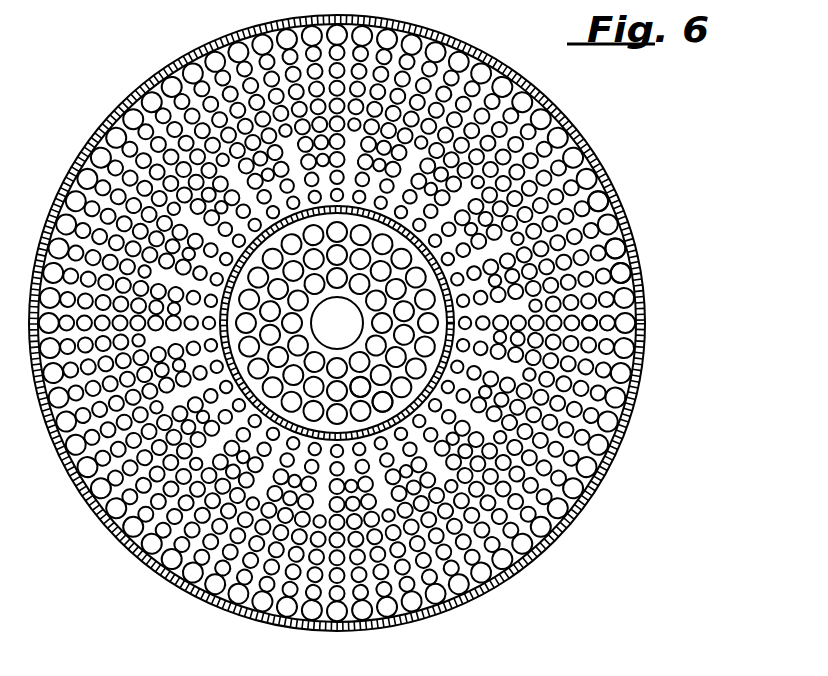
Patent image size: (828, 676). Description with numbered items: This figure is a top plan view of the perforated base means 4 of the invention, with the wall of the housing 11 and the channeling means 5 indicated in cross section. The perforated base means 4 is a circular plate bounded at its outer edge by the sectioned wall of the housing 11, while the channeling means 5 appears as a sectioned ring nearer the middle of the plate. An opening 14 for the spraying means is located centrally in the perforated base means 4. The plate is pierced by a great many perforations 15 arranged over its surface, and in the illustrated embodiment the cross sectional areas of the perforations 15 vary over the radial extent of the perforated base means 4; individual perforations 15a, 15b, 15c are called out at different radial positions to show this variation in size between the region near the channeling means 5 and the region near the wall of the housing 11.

The perforated base means 4 is at (532, 135).
The wall of the housing 11 is at (593, 165).
The channeling means 5 is at (408, 415).
The opening 14 is at (326, 336).
The perforations 15 is at (607, 203).
The perforation 15a is at (594, 327).
The perforation 15b is at (362, 390).
The perforation 15c is at (628, 272).